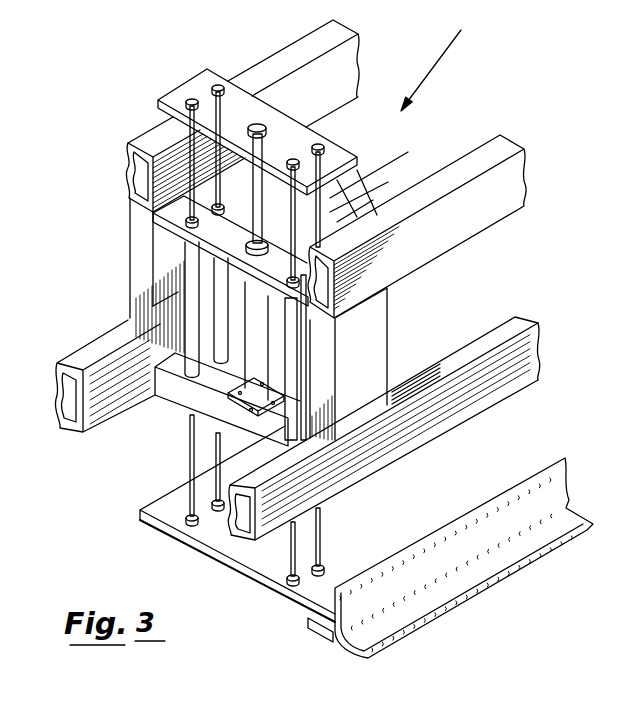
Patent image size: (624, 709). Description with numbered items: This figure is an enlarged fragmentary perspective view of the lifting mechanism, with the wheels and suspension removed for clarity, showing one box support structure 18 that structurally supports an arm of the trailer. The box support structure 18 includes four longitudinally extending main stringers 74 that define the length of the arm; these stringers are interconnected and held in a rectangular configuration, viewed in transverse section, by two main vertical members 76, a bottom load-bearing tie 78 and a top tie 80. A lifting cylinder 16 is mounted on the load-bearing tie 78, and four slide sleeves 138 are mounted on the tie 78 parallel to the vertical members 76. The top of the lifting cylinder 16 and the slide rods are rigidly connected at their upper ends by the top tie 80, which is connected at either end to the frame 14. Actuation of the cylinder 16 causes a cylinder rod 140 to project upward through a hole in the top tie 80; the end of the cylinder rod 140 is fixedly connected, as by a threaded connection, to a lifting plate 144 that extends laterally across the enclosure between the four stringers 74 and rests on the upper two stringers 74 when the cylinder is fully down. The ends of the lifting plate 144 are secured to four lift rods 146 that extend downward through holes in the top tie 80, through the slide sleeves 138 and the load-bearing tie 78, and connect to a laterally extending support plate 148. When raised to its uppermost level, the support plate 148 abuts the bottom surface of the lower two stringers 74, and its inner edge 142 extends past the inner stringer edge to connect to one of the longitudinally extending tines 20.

The frame 14 is at (540, 342).
The lifting cylinder 16 is at (248, 343).
The box support structure 18 is at (439, 58).
The longitudinally extending tine 20 is at (480, 593).
The main stringer 74 is at (311, 97).
The main vertical member 76 is at (137, 262).
The bottom load-bearing tie 78 is at (177, 407).
The top tie 80 is at (153, 238).
The slide sleeve 138 is at (190, 297).
The cylinder rod 140 is at (250, 205).
The inner edge of support plate 142 is at (318, 630).
The lifting plate 144 is at (185, 70).
The lift rod 146 is at (363, 182).
The support plate 148 is at (200, 553).